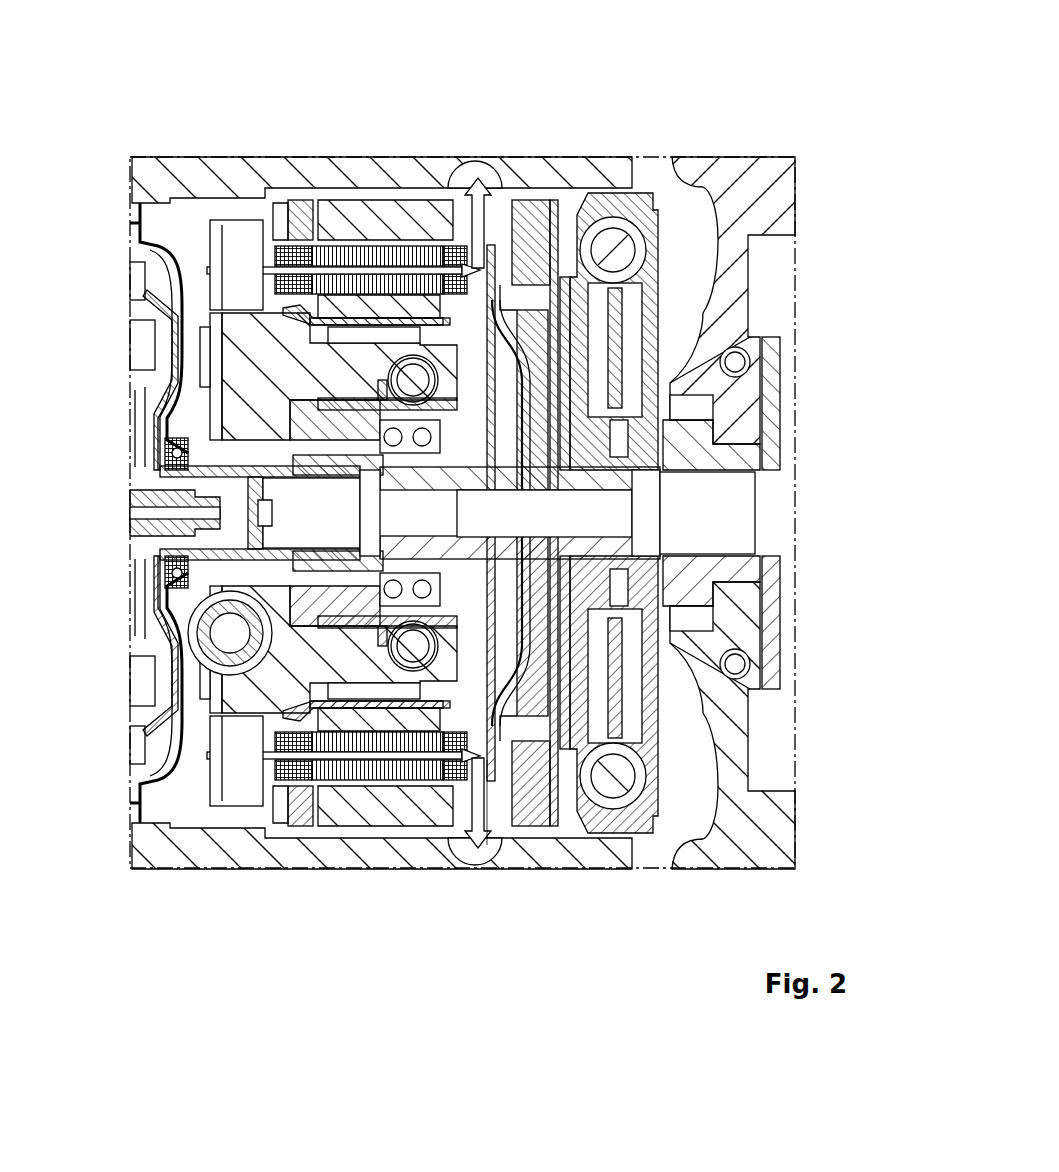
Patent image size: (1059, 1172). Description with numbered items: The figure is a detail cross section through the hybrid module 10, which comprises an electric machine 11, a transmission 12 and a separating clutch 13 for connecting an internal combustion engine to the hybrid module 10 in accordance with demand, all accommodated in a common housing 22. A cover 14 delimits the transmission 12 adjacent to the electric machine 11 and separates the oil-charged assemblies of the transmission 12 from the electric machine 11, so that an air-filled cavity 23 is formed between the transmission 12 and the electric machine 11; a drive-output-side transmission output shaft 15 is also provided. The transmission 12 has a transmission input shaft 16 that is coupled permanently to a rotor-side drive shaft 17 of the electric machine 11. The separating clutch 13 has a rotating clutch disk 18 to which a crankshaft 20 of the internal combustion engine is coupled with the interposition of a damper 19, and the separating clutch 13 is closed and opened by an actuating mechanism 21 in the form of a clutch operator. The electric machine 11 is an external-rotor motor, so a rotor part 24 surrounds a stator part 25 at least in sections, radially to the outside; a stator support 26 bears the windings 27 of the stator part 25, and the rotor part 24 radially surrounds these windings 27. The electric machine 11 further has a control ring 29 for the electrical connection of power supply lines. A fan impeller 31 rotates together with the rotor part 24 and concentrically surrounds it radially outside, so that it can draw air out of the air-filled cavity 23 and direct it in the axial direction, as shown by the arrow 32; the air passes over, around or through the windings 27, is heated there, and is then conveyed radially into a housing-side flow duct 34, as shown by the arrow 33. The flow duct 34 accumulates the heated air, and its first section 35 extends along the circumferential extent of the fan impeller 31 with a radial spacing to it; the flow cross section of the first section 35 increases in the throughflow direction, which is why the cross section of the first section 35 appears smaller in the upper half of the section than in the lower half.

The hybrid module 10 is at (730, 82).
The electric machine 11 is at (226, 198).
The transmission 12 is at (183, 795).
The separating clutch 13 is at (572, 198).
The cover 14 is at (140, 223).
The transmission output shaft 15 is at (202, 627).
The transmission input shaft 16 is at (258, 512).
The rotor-side drive shaft 17 is at (243, 558).
The clutch disk 18 is at (580, 540).
The damper 19 is at (654, 250).
The crankshaft 20 is at (717, 460).
The actuating mechanism 21 is at (410, 250).
The housing 22 is at (342, 196).
The air-filled cavity 23 is at (185, 233).
The rotor part 24 is at (503, 233).
The stator part 25 is at (268, 697).
The stator support 26 is at (230, 357).
The windings 27 is at (432, 345).
The control ring 29 is at (295, 214).
The fan impeller 31 is at (490, 247).
The arrow 32 is at (240, 760).
The arrow 33 is at (493, 825).
The housing-side flow duct 34 is at (471, 185).
The first section of the flow duct 35 is at (455, 830).